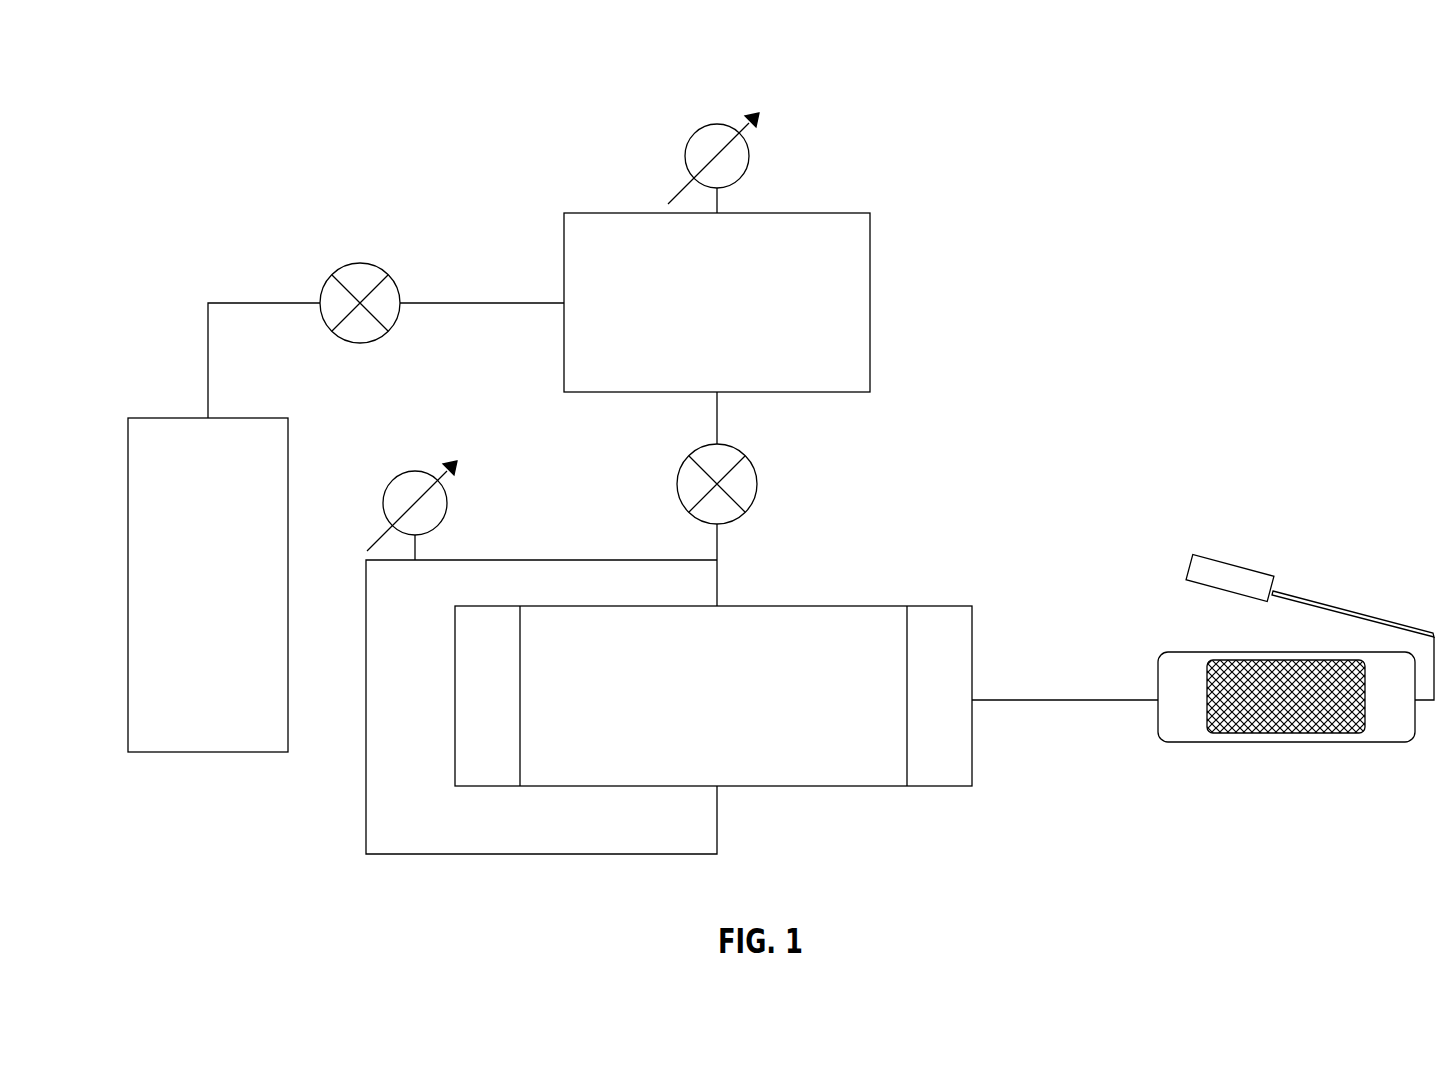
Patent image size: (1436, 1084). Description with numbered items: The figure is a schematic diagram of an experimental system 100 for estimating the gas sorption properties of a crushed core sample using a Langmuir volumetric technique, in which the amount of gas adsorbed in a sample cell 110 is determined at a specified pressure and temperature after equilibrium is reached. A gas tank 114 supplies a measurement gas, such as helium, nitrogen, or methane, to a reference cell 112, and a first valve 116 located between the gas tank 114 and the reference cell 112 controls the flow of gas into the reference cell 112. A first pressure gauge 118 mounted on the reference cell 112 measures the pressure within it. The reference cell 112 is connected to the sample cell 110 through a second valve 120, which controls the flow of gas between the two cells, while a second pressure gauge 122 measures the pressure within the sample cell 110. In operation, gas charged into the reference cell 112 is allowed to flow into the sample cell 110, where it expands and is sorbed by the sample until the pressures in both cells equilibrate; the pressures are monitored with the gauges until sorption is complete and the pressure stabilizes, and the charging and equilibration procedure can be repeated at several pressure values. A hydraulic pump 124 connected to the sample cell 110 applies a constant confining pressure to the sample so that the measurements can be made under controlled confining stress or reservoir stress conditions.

The experimental system 100 is at (165, 87).
The sample cell 110 is at (525, 605).
The reference cell 112 is at (636, 212).
The gas tank 114 is at (199, 417).
The first valve 116 is at (362, 262).
The first pressure gauge 118 is at (718, 123).
The second valve 120 is at (693, 452).
The second pressure gauge 122 is at (414, 471).
The hydraulic pump 124 is at (1228, 652).